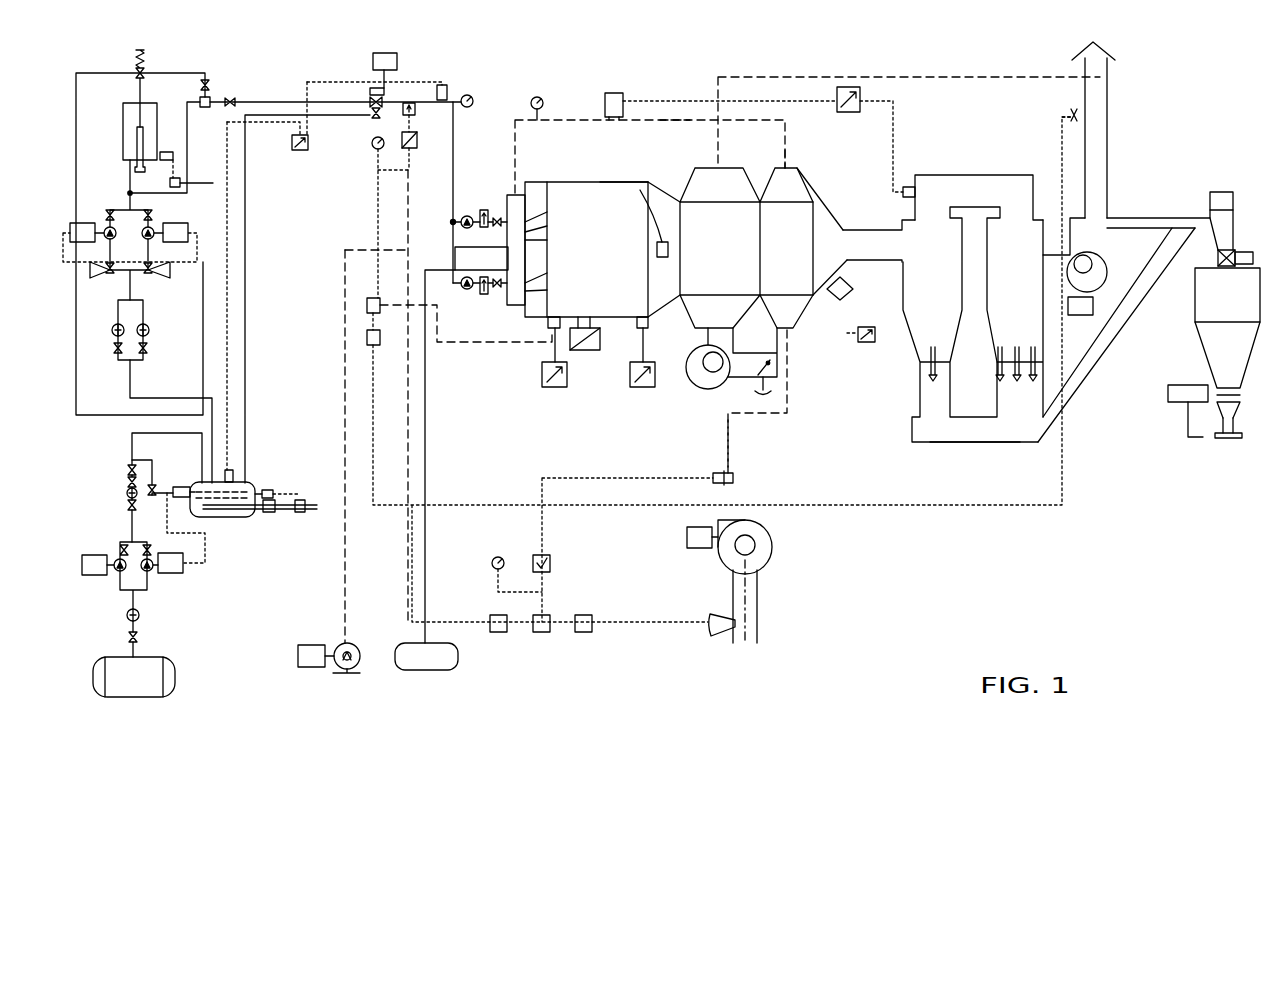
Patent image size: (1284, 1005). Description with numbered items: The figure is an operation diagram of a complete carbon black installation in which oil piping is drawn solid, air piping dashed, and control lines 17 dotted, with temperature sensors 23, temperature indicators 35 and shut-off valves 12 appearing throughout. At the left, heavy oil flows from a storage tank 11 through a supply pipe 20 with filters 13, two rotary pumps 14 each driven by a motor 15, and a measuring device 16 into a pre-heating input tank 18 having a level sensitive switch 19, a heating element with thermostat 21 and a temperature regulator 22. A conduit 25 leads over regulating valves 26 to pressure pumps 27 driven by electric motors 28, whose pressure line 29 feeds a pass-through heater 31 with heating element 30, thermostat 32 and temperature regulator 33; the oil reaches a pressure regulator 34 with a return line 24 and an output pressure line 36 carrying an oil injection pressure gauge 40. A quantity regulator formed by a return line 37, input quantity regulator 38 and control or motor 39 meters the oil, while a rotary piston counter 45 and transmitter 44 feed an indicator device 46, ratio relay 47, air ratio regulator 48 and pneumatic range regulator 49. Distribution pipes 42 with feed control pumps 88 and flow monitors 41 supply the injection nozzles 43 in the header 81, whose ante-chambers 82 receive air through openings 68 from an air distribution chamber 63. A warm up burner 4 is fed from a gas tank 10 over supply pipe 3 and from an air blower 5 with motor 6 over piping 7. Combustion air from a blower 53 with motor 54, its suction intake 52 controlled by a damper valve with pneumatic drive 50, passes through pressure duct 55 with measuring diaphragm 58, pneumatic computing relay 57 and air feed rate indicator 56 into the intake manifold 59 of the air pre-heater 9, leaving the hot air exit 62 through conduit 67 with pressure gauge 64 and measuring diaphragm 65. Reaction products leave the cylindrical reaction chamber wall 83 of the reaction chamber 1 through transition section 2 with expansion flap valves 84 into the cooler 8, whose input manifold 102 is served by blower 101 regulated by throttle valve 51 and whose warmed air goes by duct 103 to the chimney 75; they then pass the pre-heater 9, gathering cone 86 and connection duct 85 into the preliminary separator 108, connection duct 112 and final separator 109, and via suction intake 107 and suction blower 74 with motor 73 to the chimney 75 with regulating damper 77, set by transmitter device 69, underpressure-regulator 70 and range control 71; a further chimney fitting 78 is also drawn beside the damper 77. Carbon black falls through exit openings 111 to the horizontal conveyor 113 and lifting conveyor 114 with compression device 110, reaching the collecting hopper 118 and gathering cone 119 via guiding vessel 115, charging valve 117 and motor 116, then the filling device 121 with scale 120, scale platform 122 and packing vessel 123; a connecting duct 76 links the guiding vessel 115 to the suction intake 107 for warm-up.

The reaction chamber 1 is at (602, 248).
The transition section 2 is at (660, 200).
The supply pipe 3 is at (425, 410).
The warm up burner 4 is at (462, 250).
The air blower 5 is at (347, 673).
The electric motor 6 is at (312, 667).
The piping 7 is at (345, 413).
The cooler 8 is at (724, 243).
The air pre-heater 9 is at (789, 243).
The gas tank 10 is at (425, 670).
The storage tank 11 is at (170, 677).
The shut-off valves 12 is at (207, 84).
The filters 13 is at (112, 330).
The rotary pumps 14 is at (116, 570).
The motor 15 is at (90, 568).
The measuring device 16 is at (128, 481).
The control lines 17 is at (415, 82).
The pre-heating input tank 18 is at (225, 515).
The level sensitive switch 19 is at (178, 487).
The supply pipe 20 is at (150, 433).
The heating element with thermostat 21 is at (295, 508).
The temperature regulator 22 is at (267, 490).
The temperature sensors 23 is at (445, 85).
The return line 24 is at (97, 73).
The conduit 25 is at (153, 398).
The regulating valves 26 is at (98, 278).
The pressure pumps 27 is at (115, 239).
The electric motor 28 is at (85, 230).
The pressure line 29 is at (130, 175).
The heating element 30 is at (140, 140).
The pass-through heater 31 is at (130, 110).
The thermostat 32 is at (182, 180).
The temperature regulator 33 is at (205, 108).
The pressure regulator 34 is at (139, 77).
The temperature indicators 35 is at (300, 150).
The output pressure line 36 is at (270, 102).
The return line 37 is at (370, 98).
The input quantity regulator 38 is at (372, 89).
The control or motor 39 is at (386, 56).
The oil injection pressure gauge 40 is at (474, 98).
The flow monitor 41 is at (480, 214).
The distribution pipes 42 is at (453, 224).
The injection nozzles 43 is at (548, 210).
The transmitter 44 is at (417, 142).
The rotary piston counter 45 is at (415, 112).
The indicator device 46 is at (372, 143).
The ratio relay 47 is at (498, 632).
The air ratio regulator 48 is at (542, 632).
The pneumatic range regulator 49 is at (585, 632).
The damper valve with pneumatic drive 50 is at (718, 637).
The throttle valve 51 is at (760, 388).
The suction intake 52 is at (757, 597).
The blower 53 is at (770, 552).
The electric motor 54 is at (687, 537).
The pressure duct 55 is at (730, 440).
The air feed rate indicator 56 is at (492, 563).
The pneumatic computing relay 57 is at (550, 563).
The measuring diaphragm 58 is at (733, 478).
The intake manifold 59 is at (789, 332).
The hot air exit 62 is at (788, 167).
The air distribution chamber 63 is at (513, 200).
The pressure gauge 64 is at (537, 97).
The measuring diaphragm 65 is at (557, 119).
The conduit 67 is at (670, 118).
The openings 68 is at (538, 284).
The transmitter device 69 is at (585, 350).
The pneumatic underpressure-regulator 70 is at (367, 303).
The range control 71 is at (367, 336).
The electric motor 73 is at (1093, 306).
The suction blower 74 is at (1098, 265).
The chimney 75 is at (1107, 153).
The connecting duct 76 is at (1133, 218).
The regulating damper 77 is at (1097, 115).
The damper 78 is at (1068, 115).
The header 81 is at (538, 187).
The ante-chambers 82 is at (540, 222).
The cylindrical reaction chamber wall 83 is at (600, 183).
The expansion flap valves 84 is at (640, 190).
The connection duct 85 is at (873, 240).
The gathering funnel or cone 86 is at (823, 223).
The feed control pump 88 is at (462, 216).
The blower 101 is at (700, 388).
The input manifold 102 is at (733, 340).
The duct 103 is at (888, 77).
The suction intake 107 is at (1062, 255).
The preliminary carbon black separator 108 is at (956, 309).
The final carbon black separator 109 is at (1038, 309).
The carbon black compression device 110 is at (1117, 327).
The carbon black exit openings 111 is at (1010, 372).
The connection duct 112 is at (973, 177).
The horizontal carbon black conveyor 113 is at (978, 442).
The inclined lifting conveyor 114 is at (1068, 393).
The guiding vessel 115 is at (1210, 228).
The electric motor 116 is at (1222, 192).
The vane-type charging valve 117 is at (1240, 250).
The collecting hopper 118 is at (1205, 316).
The gathering cone 119 is at (1210, 352).
The carbon black scale 120 is at (1180, 402).
The filling device 121 is at (1188, 437).
The scale platform 122 is at (1225, 435).
The packing vessel 123 is at (1242, 437).